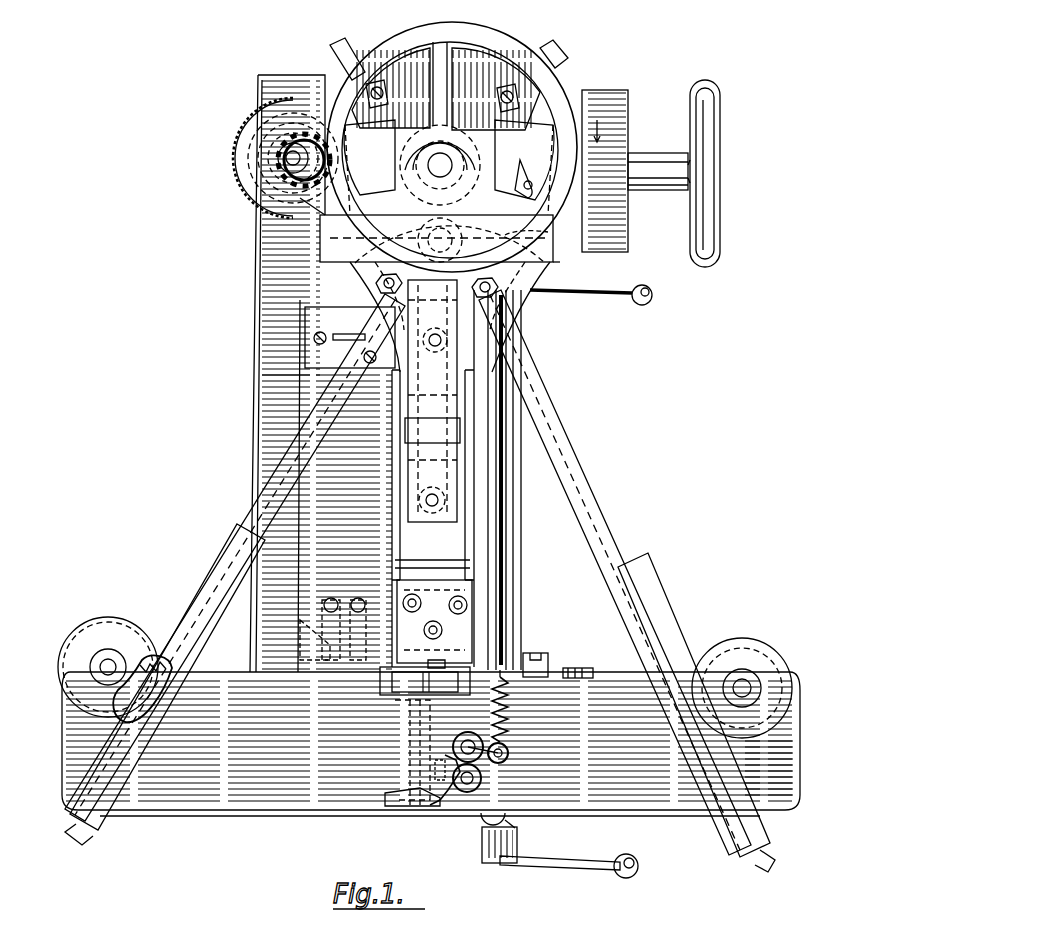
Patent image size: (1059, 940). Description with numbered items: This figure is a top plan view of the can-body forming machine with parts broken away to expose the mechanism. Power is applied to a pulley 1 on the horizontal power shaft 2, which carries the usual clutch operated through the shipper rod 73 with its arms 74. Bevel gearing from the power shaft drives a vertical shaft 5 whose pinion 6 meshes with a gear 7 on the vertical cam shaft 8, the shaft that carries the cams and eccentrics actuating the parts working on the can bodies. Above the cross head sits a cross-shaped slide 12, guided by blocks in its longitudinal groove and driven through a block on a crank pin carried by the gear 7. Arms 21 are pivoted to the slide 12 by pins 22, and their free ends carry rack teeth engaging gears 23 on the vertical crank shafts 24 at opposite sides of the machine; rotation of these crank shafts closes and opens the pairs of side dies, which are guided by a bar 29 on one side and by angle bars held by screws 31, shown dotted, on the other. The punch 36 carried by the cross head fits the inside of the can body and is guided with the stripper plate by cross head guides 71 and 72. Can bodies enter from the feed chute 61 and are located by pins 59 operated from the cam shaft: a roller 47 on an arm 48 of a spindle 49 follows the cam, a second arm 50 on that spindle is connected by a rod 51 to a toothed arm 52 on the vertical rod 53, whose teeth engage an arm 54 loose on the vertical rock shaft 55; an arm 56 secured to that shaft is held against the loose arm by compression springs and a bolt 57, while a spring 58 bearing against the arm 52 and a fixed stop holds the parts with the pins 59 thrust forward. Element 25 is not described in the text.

The pulley 1 is at (628, 106).
The power shaft 2 is at (640, 156).
The vertical shaft 5 is at (290, 160).
The pinion 6 is at (294, 180).
The gear 7 is at (300, 198).
The vertical shaft 8 is at (440, 168).
The slide 12 is at (438, 405).
The arms 21 is at (600, 518).
The pins 22 is at (495, 292).
The gears 23 is at (135, 672).
The vertical crank shafts 24 is at (742, 688).
The sleeve 25 is at (670, 613).
The guide bar 29 is at (547, 660).
The screws 31 is at (358, 600).
The punch 36 is at (305, 640).
The roller 47 is at (543, 155).
The arm 48 is at (545, 179).
The spindle 49 is at (612, 232).
The arm 50 is at (548, 232).
The rod 51 is at (503, 507).
The arm 52 is at (588, 668).
The vertical rod 53 is at (490, 760).
The arm 54 is at (452, 785).
The vertical rock shaft 55 is at (468, 783).
The arm 56 is at (405, 805).
The bolt 57 is at (430, 790).
The spring 58 is at (506, 716).
The pins 59 is at (442, 660).
The feed chute 61 is at (400, 690).
The cross head guide 71 is at (478, 570).
The cross head guide 72 is at (438, 606).
The shipper rod 73 is at (510, 826).
The arms 74 is at (575, 866).